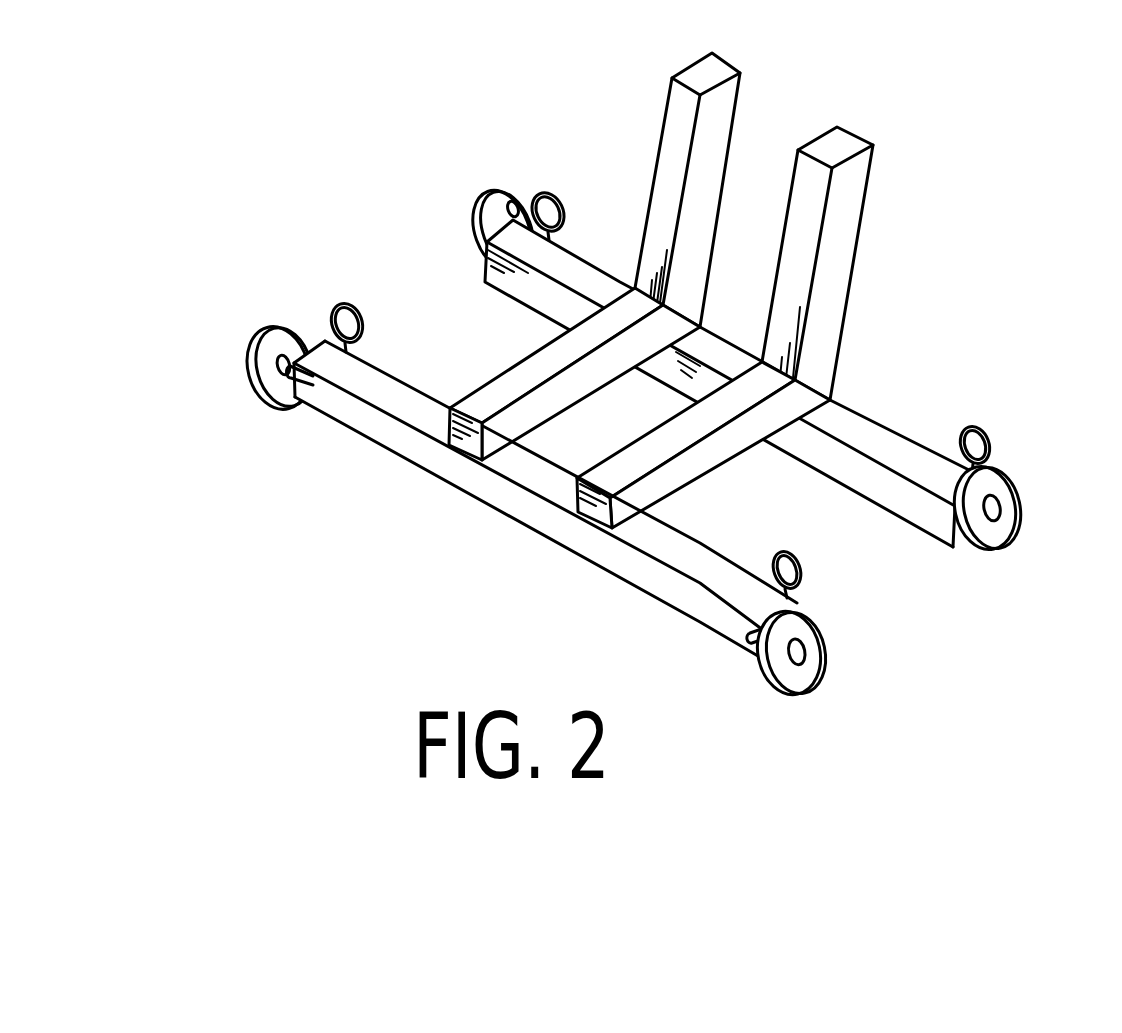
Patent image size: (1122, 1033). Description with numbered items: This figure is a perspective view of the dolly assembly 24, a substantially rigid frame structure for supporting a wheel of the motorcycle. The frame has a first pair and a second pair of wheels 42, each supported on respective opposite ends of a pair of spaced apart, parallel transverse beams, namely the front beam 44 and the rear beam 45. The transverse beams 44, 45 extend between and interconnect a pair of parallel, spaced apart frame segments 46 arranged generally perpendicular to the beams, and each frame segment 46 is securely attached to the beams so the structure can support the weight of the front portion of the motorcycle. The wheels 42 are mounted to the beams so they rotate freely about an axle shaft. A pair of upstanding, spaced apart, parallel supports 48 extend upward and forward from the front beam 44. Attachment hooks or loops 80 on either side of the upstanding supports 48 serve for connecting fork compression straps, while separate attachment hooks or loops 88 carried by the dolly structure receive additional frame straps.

The dolly assembly 24 is at (670, 379).
The wheels 42 is at (272, 392).
The front transverse beam 44 is at (708, 355).
The rear transverse beam 45 is at (540, 473).
The frame segments 46 is at (527, 372).
The upstanding supports 48 is at (710, 157).
The attachment hooks or loops 80 is at (553, 197).
The attachment hooks or loops 88 is at (343, 303).